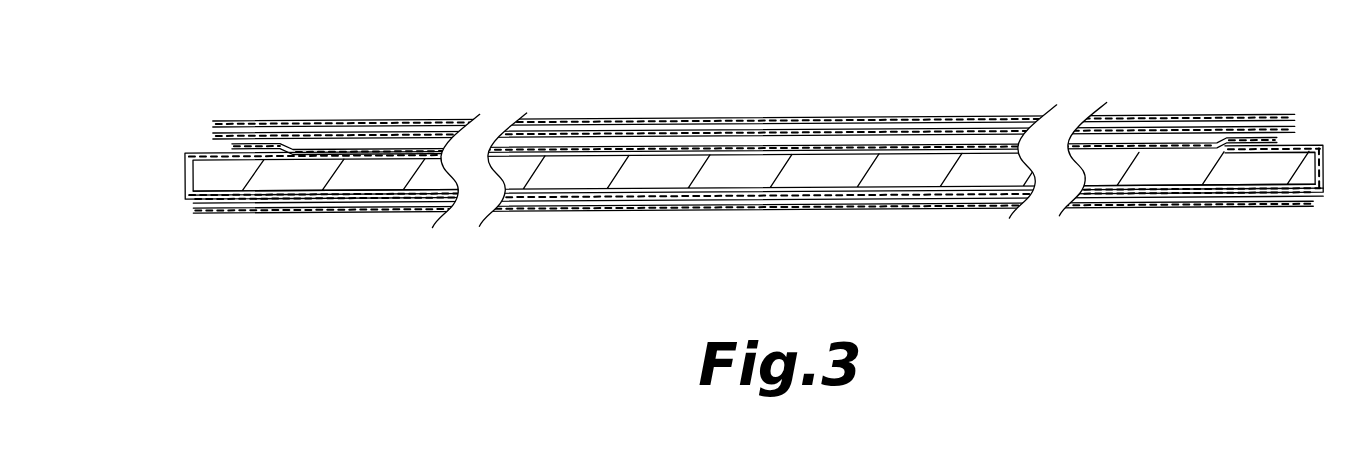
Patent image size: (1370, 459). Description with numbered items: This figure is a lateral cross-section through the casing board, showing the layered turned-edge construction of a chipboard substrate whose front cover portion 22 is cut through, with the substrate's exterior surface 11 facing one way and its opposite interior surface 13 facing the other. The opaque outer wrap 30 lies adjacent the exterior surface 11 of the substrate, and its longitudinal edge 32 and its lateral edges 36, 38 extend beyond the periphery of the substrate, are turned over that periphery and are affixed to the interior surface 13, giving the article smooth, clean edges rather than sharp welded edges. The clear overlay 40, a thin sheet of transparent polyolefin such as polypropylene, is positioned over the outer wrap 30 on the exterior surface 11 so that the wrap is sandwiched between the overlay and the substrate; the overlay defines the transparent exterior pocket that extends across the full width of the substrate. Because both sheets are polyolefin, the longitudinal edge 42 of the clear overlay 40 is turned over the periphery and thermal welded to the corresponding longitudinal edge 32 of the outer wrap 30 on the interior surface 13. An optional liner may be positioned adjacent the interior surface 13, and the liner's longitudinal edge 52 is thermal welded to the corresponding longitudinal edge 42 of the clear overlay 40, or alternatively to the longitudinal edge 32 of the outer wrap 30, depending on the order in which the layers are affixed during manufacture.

The exterior surface 11 is at (578, 188).
The interior surface 13 is at (920, 156).
The front cover portion 22 is at (383, 183).
The outer wrap 30 is at (302, 198).
The longitudinal edge of outer wrap 32 is at (303, 143).
The lateral edge of outer wrap 36 is at (1305, 148).
The lateral edge of outer wrap 38 is at (212, 152).
The clear overlay 40 is at (208, 211).
The longitudinal edge of clear overlay 42 is at (383, 131).
The longitudinal edge of liner 52 is at (222, 120).